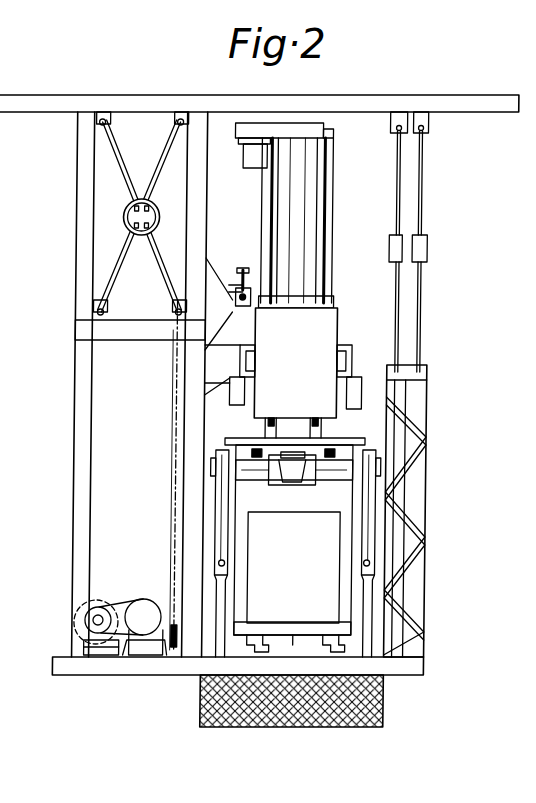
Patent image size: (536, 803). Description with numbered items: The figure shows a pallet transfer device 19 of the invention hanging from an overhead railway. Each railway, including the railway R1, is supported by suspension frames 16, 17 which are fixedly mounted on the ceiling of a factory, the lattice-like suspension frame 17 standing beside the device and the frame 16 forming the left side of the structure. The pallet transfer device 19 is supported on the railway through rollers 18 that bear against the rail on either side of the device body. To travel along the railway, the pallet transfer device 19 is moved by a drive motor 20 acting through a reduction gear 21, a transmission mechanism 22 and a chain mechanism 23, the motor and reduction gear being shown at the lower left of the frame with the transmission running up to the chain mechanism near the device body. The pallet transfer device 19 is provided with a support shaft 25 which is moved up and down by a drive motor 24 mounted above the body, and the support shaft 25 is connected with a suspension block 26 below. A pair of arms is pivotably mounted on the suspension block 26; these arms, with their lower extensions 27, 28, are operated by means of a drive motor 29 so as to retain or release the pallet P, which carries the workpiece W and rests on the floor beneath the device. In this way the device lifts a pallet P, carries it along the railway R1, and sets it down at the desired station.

The suspension frame 16 is at (79, 374).
The suspension frame 17 is at (429, 405).
The rollers 18 is at (244, 357).
The pallet transfer device 19 is at (304, 380).
The drive motor 20 is at (107, 605).
The reduction gear 21 is at (150, 643).
The transmission mechanism 22 is at (176, 452).
The chain mechanism 23 is at (243, 292).
The drive motor 24 is at (256, 158).
The support shaft 25 is at (330, 422).
The suspension block 26 is at (368, 515).
The left arm 27 is at (221, 540).
The lower leg 28 is at (370, 617).
The drive motor 29 is at (310, 480).
The railway R1 is at (352, 372).
The workpiece W is at (308, 595).
The pallet P is at (370, 690).